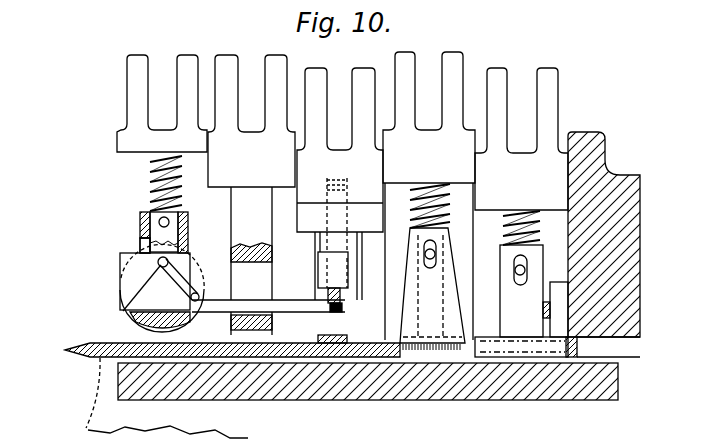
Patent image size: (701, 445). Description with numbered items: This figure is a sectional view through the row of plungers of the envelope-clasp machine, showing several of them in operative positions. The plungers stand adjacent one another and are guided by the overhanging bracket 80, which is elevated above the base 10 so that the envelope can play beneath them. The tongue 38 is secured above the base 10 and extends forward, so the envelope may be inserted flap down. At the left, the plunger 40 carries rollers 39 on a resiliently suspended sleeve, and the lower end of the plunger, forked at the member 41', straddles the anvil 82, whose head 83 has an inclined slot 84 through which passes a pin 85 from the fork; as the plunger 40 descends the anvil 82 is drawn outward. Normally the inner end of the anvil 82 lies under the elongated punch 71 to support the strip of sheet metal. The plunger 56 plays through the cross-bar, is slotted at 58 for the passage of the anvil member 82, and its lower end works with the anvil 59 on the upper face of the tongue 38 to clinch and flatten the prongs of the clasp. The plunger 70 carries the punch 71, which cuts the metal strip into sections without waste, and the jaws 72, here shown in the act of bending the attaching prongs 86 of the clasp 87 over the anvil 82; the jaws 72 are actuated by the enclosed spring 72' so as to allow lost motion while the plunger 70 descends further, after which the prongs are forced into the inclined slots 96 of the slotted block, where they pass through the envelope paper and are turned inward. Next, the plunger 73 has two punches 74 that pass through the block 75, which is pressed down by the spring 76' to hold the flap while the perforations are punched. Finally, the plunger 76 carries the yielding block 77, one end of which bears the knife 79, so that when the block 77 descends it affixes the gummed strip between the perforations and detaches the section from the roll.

The base 10 is at (460, 397).
The tongue 38 is at (118, 366).
The rollers 39 is at (120, 271).
The plunger 40 is at (150, 194).
The link arm 41' is at (190, 276).
The plunger 56 is at (232, 236).
The slot 58 is at (273, 289).
The anvil 59 is at (243, 350).
The plunger 70 is at (340, 150).
The elongated punch 71 is at (314, 244).
The jaws 72 is at (357, 273).
The enclosed spring 72' is at (356, 204).
The plunger 73 is at (429, 196).
The punches 74 is at (442, 278).
The block 75 is at (400, 340).
The plunger 76 is at (521, 139).
The spring 76' is at (146, 209).
The yielding block 77 is at (498, 347).
The knife 79 is at (580, 347).
The overhanging bracket 80 is at (604, 234).
The anvil 82 is at (284, 313).
The head 83 is at (120, 307).
The inclined slot 84 is at (207, 319).
The pin 85 is at (126, 312).
The attaching prongs 86 is at (344, 307).
The clasp 87 is at (342, 296).
The inclined slots 96 is at (327, 352).